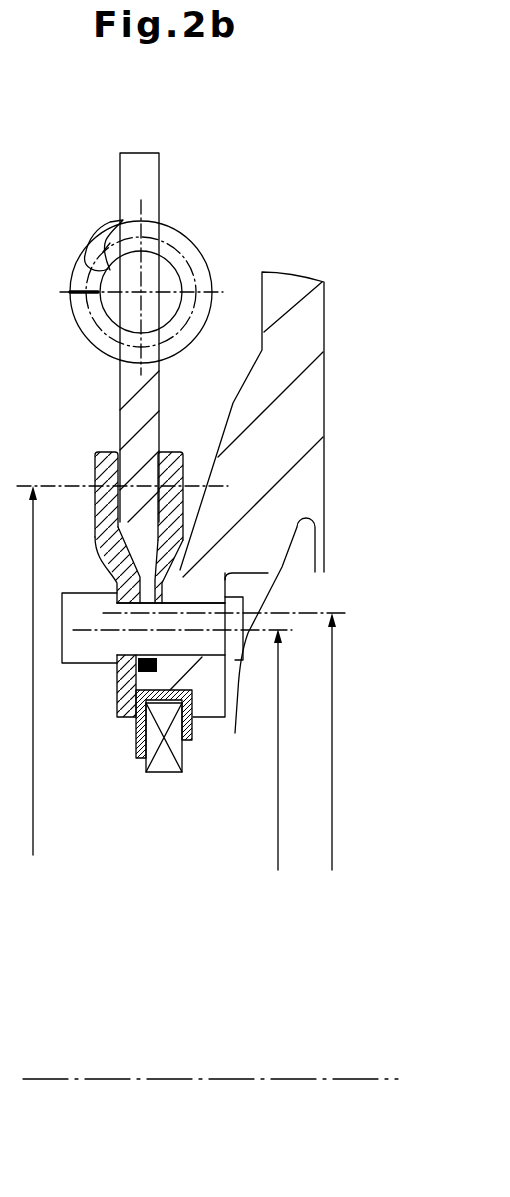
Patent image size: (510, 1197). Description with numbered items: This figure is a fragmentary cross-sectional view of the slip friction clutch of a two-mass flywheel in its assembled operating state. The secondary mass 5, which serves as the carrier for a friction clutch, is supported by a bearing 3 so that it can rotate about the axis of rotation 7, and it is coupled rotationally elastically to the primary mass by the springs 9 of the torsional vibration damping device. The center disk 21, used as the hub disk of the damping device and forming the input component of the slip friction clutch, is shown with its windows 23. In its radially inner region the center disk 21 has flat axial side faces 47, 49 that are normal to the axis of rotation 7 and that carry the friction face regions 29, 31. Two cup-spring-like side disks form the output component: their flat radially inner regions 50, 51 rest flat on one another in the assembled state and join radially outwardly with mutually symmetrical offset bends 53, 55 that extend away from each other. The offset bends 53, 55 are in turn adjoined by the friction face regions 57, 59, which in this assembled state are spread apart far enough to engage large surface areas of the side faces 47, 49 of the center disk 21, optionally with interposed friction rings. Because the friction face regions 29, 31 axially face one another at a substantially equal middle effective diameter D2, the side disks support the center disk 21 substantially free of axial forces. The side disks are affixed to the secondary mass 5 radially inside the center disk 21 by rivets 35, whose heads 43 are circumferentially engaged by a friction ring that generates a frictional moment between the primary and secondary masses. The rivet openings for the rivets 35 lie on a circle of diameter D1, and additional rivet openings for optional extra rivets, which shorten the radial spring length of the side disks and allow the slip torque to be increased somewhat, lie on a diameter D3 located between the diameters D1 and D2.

The bearing 3 is at (163, 760).
The secondary mass 5 is at (305, 313).
The axis of rotation 7 is at (165, 1078).
The springs 9 is at (187, 255).
The center disk 21 is at (140, 432).
The windows 23 is at (147, 175).
The friction face region 29 is at (175, 475).
The friction face region 31 is at (112, 467).
The rivets 35 is at (245, 662).
The heads 43 is at (85, 650).
The axial side face 47 is at (172, 452).
The axial side face 49 is at (118, 442).
The flat radially inner region 50 is at (160, 590).
The flat radially inner region 51 is at (127, 703).
The offset bend 53 is at (180, 545).
The offset bend 55 is at (108, 560).
The friction face region 57 is at (172, 505).
The friction face region 59 is at (95, 497).
The diameter D1 is at (283, 771).
The middle effective diameter D2 is at (34, 692).
The diameter D3 is at (333, 763).